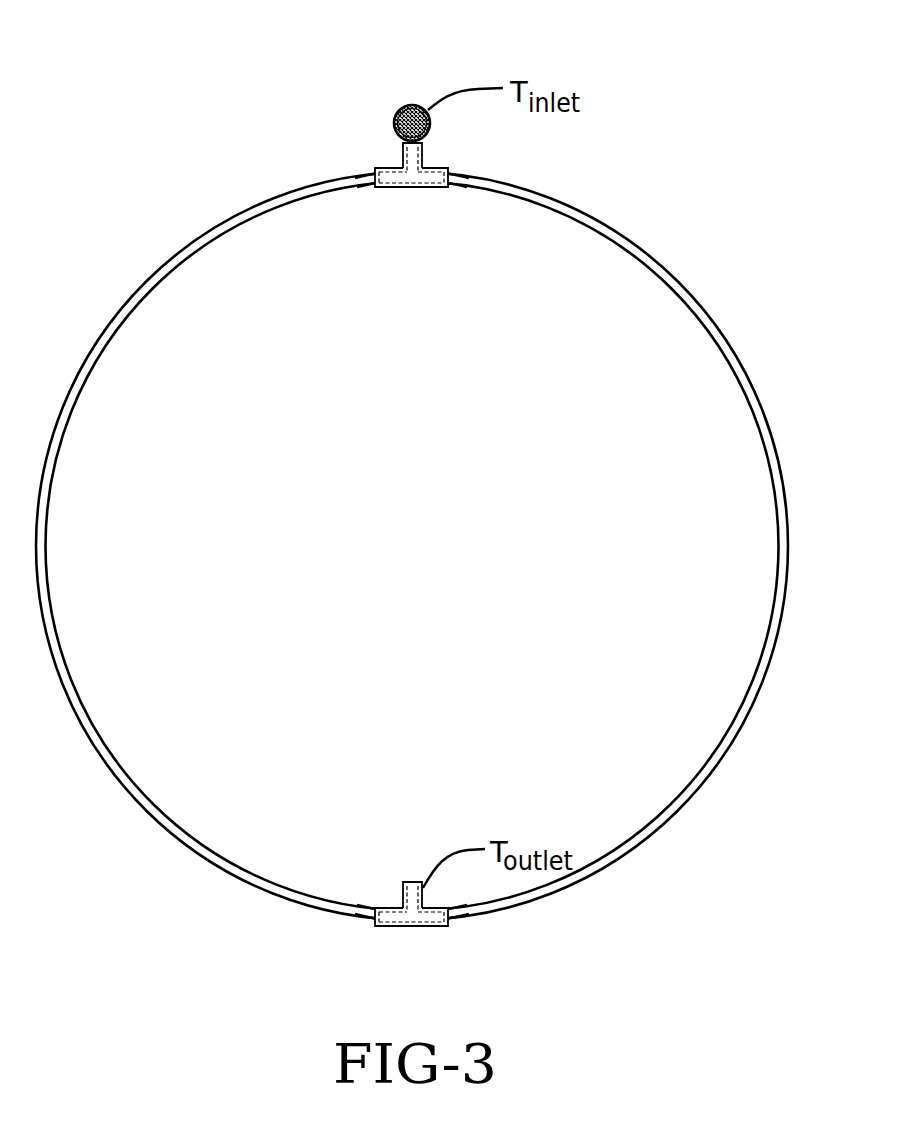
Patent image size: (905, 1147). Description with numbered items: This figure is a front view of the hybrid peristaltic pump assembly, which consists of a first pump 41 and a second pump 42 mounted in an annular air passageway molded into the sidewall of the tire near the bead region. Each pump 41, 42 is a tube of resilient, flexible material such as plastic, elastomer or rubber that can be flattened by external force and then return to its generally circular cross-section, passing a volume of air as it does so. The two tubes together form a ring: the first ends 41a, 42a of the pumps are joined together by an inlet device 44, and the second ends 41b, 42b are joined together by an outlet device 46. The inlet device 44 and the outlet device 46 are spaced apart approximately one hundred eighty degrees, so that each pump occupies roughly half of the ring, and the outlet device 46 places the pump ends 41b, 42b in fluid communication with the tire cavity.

The first pump 41 is at (50, 483).
The second pump 42 is at (772, 483).
The first end of first pump 41a is at (373, 177).
The first end of second pump 42a is at (452, 177).
The second end of first pump 41b is at (373, 917).
The second end of second pump 42b is at (451, 917).
The inlet device 44 is at (396, 110).
The outlet device 46 is at (403, 890).